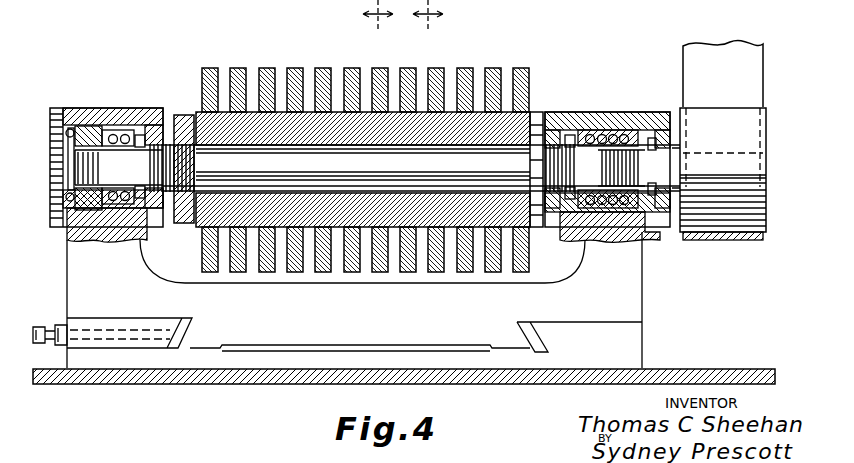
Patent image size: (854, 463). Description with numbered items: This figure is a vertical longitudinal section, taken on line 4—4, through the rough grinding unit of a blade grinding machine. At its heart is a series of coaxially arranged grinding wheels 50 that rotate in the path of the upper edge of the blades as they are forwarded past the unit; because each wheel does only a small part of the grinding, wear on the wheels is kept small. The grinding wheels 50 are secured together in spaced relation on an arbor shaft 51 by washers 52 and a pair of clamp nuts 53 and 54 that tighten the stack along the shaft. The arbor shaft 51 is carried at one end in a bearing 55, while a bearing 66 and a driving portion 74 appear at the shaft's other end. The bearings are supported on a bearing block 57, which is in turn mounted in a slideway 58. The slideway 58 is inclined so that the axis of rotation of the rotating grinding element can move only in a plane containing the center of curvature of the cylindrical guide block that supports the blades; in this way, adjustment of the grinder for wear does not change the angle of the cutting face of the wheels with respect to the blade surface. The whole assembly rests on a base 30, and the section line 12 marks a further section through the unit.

The section line 4 is at (428, 26).
The section line 12- 12 is at (375, 26).
The base plate 30 is at (658, 369).
The grinding wheels 50 is at (285, 68).
The arbor shaft 51 is at (768, 157).
The washers 52 is at (505, 112).
The clamp nut 53 is at (183, 115).
The clamp nut 54 is at (537, 112).
The bearing 55 is at (110, 127).
The bearing block 57 is at (643, 277).
The slideway 58 is at (642, 336).
The right bearing assembly 66 is at (600, 130).
The drive member 74 is at (765, 108).